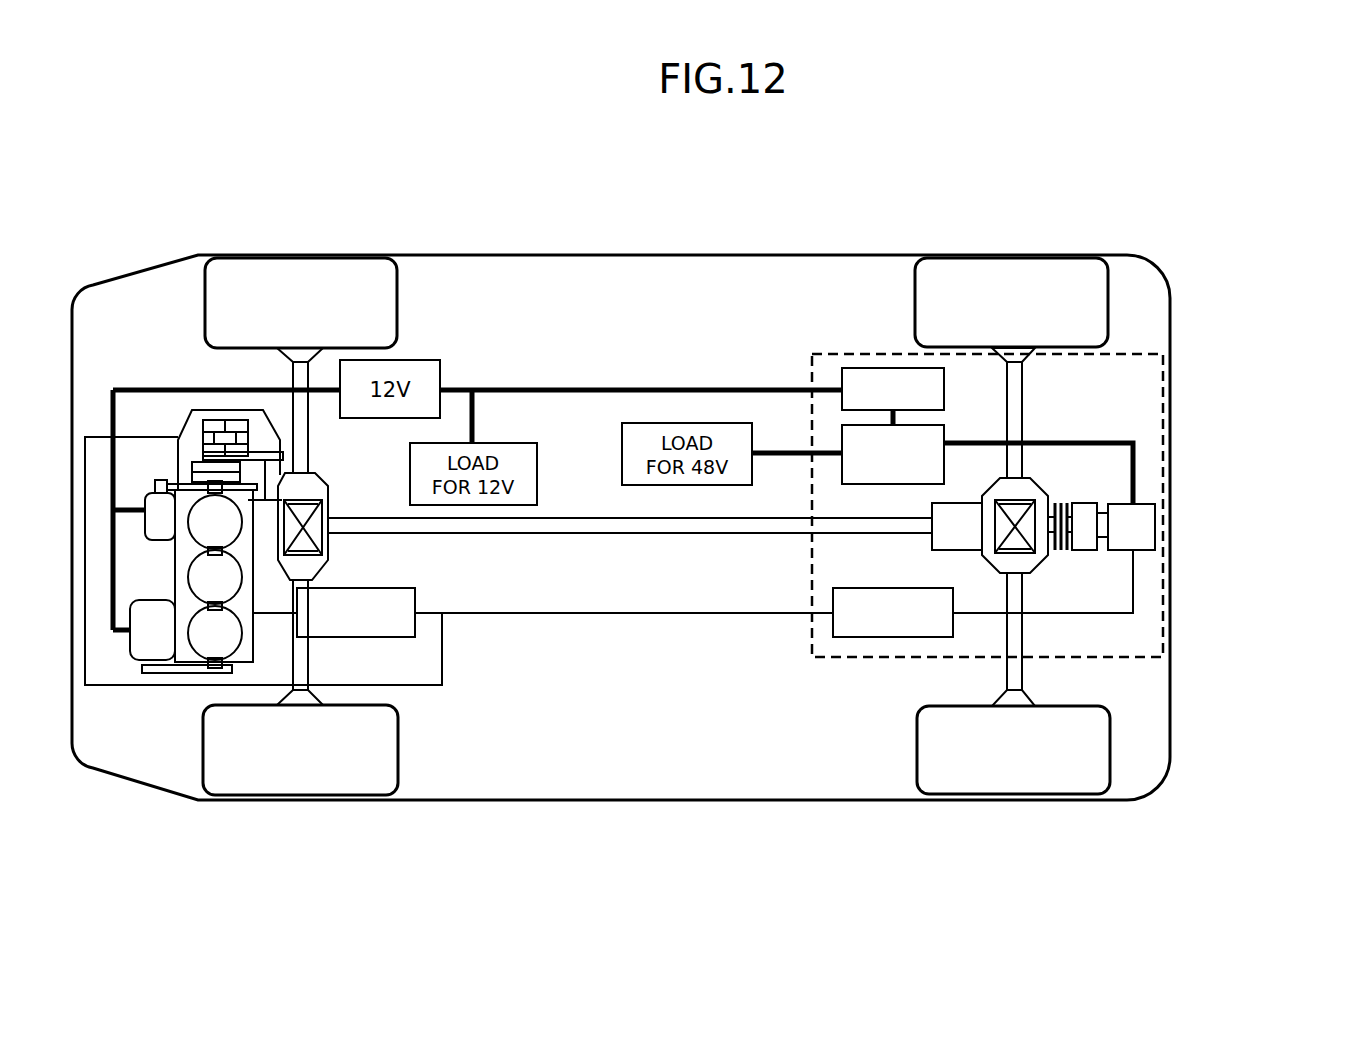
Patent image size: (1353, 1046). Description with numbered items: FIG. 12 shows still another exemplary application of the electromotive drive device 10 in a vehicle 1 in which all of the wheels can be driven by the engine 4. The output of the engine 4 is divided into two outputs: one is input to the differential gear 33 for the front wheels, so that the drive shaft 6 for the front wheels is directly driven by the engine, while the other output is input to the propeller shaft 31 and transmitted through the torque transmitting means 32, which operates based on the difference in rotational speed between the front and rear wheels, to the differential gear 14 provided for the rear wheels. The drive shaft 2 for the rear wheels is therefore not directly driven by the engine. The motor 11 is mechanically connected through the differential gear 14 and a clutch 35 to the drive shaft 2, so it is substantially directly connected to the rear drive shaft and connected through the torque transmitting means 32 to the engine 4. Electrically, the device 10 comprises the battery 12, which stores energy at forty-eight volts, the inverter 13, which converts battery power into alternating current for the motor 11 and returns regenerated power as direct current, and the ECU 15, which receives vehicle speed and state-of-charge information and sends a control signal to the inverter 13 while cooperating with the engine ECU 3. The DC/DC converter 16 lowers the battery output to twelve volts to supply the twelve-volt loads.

The vehicle 1 is at (573, 252).
The drive shaft for the rear wheels 2 is at (1022, 673).
The ECU 3 is at (361, 587).
The engine 4 is at (174, 572).
The drive shaft for the front wheels 6 is at (310, 438).
The electromotive drive device 10 is at (832, 657).
The motor 11 is at (1087, 503).
The battery 12 is at (842, 472).
The inverter 13 is at (1143, 551).
The differential gear 14 is at (1043, 556).
The ECU 15 is at (893, 637).
The DC/DC converter 16 is at (872, 368).
The propeller shaft 31 is at (620, 536).
The torque transmitting means 32 is at (957, 503).
The differential gear for the front wheels 33 is at (332, 472).
The clutch 35 is at (1062, 554).